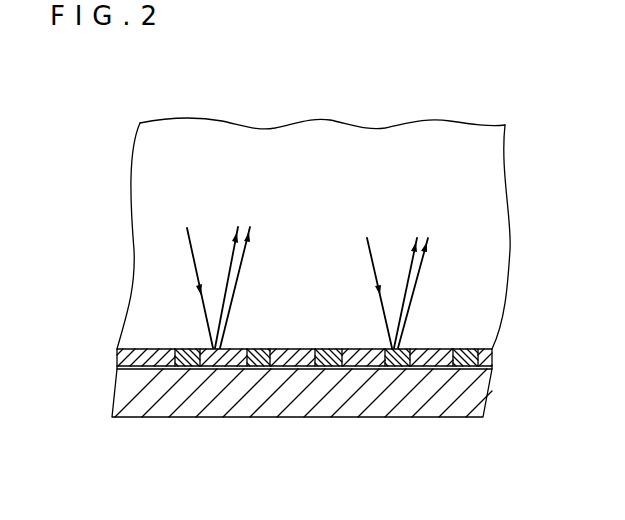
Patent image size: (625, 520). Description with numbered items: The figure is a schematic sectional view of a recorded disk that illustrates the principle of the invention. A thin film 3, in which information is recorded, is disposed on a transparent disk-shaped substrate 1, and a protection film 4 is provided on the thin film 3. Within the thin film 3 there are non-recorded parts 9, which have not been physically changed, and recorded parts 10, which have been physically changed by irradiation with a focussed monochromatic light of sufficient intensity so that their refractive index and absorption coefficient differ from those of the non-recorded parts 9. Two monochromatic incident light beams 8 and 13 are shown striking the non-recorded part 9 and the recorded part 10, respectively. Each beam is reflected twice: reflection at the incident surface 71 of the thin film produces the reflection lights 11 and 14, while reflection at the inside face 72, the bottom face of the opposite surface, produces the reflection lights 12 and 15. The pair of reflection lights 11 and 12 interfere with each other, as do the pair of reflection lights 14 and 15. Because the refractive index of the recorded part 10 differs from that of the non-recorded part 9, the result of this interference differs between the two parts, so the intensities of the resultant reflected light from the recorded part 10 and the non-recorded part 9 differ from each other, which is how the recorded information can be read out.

The transparent disk-shaped substrate 1 is at (140, 305).
The thin film 3 is at (156, 354).
The protection film 4 is at (463, 403).
The monochromatic incident light beam 8 is at (193, 250).
The non-recorded part 9 is at (235, 368).
The recorded part 10 is at (262, 370).
The reflection light 11 is at (232, 258).
The reflection light 12 is at (245, 250).
The monochromatic incident light beam 13 is at (373, 263).
The reflection light 14 is at (412, 263).
The reflection light 15 is at (415, 286).
The incident surface 71 is at (128, 356).
The inside face 72 is at (127, 369).